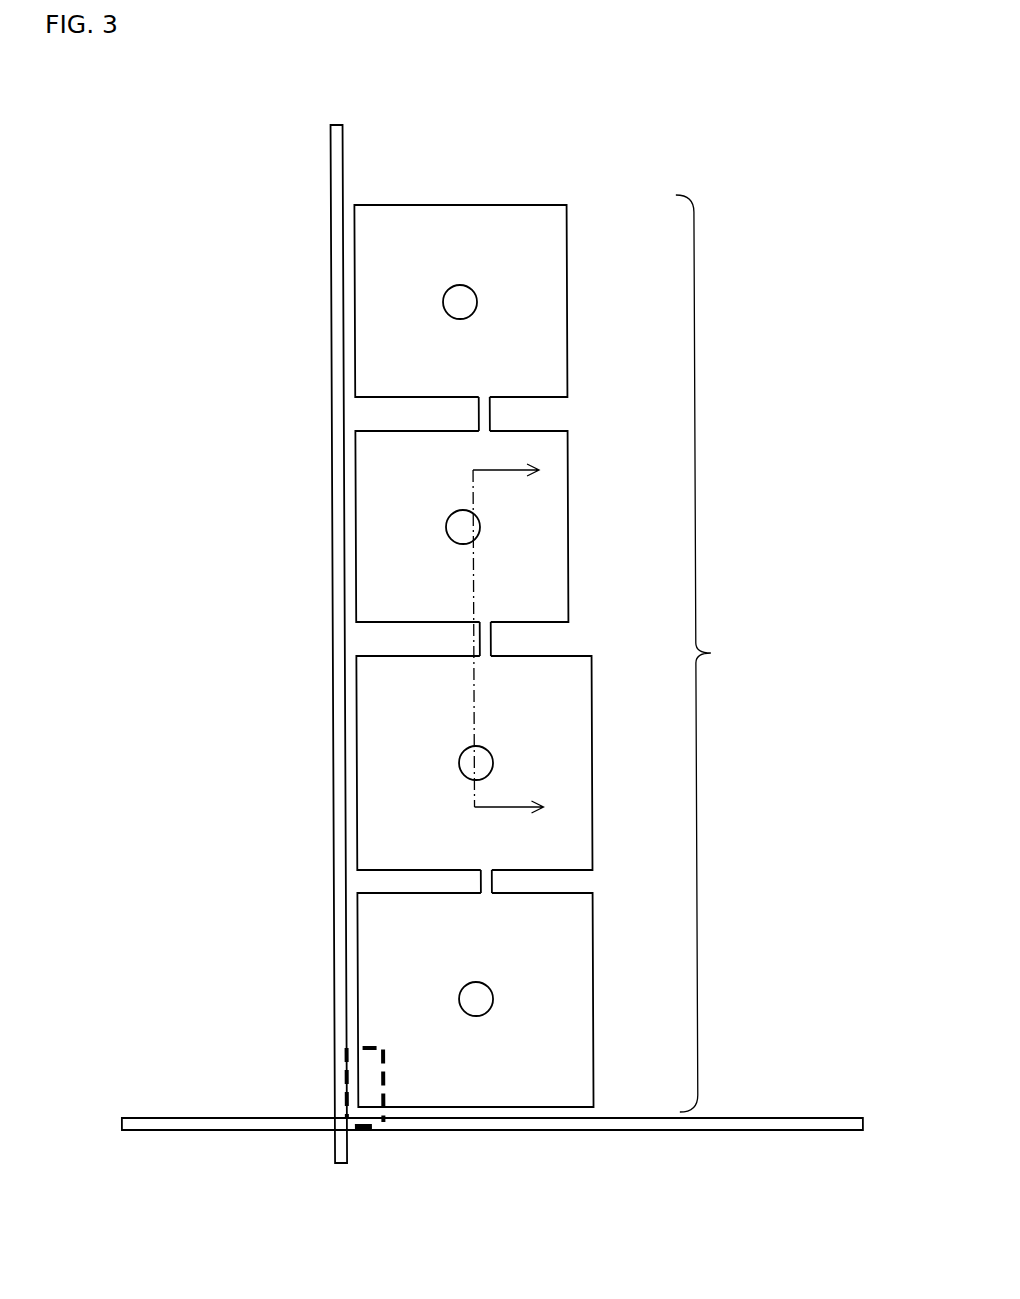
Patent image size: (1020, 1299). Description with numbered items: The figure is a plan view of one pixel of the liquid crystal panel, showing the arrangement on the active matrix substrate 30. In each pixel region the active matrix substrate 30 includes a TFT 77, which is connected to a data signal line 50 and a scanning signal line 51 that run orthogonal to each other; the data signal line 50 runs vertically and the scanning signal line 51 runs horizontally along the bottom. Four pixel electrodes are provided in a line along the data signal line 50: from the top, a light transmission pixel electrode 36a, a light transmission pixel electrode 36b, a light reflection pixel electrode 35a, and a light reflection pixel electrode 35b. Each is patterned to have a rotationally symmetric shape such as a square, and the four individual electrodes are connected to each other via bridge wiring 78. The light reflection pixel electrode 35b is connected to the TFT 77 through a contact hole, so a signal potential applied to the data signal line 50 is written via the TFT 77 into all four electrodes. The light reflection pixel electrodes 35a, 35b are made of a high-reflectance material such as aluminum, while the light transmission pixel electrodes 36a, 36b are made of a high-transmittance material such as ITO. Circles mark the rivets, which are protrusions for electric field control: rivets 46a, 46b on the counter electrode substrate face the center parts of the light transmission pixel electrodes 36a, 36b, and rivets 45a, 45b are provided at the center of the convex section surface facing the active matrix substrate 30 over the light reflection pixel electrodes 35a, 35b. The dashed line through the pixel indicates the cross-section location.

The active matrix substrate 30 is at (489, 126).
The data signal line 50 is at (336, 125).
The scanning signal line 51 is at (215, 1118).
The light transmission pixel electrode 36a is at (566, 240).
The light transmission pixel electrode 36b is at (566, 444).
The light reflection pixel electrode 35a is at (589, 690).
The light reflection pixel electrode 35b is at (589, 940).
The rivet 46a is at (476, 303).
The rivet 46b is at (444, 528).
The rivet 45a is at (456, 765).
The rivet 45b is at (489, 999).
The bridge wiring 78 is at (488, 640).
The TFT 77 is at (362, 1133).